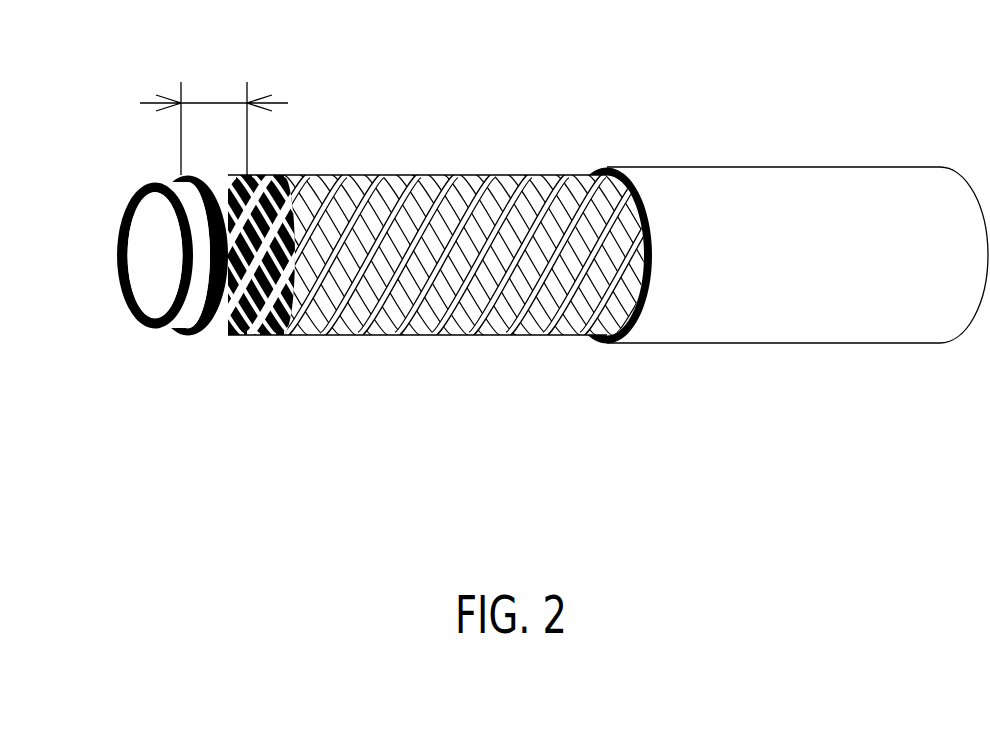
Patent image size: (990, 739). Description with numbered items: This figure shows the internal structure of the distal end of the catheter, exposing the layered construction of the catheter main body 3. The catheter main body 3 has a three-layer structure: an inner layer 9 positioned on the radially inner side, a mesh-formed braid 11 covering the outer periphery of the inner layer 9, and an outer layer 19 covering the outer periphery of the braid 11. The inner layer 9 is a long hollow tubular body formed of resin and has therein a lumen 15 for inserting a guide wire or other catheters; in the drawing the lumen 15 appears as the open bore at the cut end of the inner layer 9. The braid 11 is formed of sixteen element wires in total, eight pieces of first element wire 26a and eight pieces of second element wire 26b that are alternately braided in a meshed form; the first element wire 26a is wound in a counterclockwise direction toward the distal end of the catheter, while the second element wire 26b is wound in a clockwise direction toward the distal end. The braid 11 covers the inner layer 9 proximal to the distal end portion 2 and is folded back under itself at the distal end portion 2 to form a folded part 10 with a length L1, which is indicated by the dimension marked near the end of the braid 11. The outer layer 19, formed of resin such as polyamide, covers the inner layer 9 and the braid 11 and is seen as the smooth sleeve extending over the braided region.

The distal end portion 2 is at (193, 364).
The catheter main body 3 is at (595, 145).
The inner layer 9 is at (132, 195).
The folded part 10 is at (243, 337).
The braid 11 is at (439, 251).
The lumen 15 is at (140, 258).
The outer layer 19 is at (767, 167).
The first element wire 26a is at (335, 175).
The second element wire 26b is at (365, 277).
The length of the folded part L1 is at (214, 108).